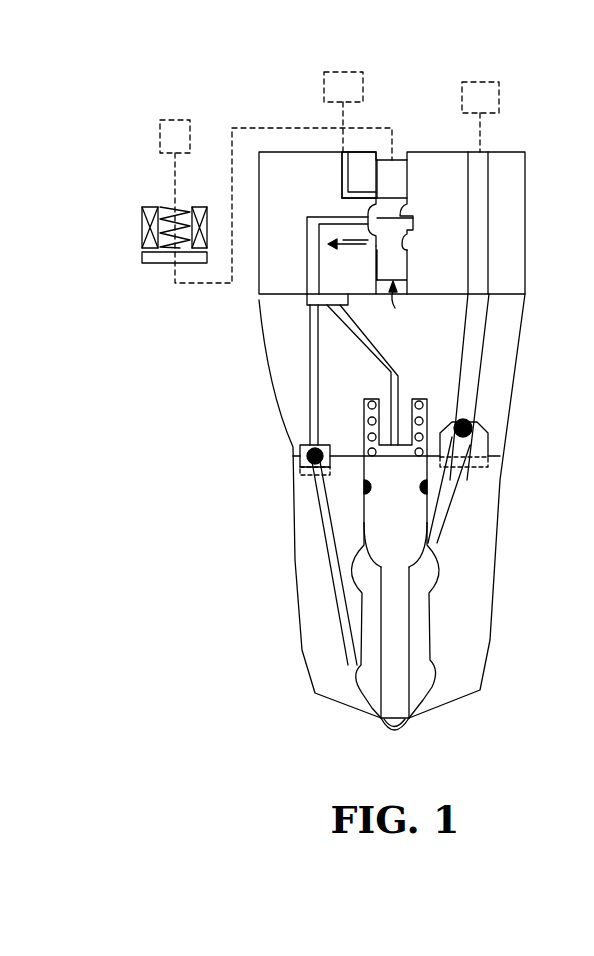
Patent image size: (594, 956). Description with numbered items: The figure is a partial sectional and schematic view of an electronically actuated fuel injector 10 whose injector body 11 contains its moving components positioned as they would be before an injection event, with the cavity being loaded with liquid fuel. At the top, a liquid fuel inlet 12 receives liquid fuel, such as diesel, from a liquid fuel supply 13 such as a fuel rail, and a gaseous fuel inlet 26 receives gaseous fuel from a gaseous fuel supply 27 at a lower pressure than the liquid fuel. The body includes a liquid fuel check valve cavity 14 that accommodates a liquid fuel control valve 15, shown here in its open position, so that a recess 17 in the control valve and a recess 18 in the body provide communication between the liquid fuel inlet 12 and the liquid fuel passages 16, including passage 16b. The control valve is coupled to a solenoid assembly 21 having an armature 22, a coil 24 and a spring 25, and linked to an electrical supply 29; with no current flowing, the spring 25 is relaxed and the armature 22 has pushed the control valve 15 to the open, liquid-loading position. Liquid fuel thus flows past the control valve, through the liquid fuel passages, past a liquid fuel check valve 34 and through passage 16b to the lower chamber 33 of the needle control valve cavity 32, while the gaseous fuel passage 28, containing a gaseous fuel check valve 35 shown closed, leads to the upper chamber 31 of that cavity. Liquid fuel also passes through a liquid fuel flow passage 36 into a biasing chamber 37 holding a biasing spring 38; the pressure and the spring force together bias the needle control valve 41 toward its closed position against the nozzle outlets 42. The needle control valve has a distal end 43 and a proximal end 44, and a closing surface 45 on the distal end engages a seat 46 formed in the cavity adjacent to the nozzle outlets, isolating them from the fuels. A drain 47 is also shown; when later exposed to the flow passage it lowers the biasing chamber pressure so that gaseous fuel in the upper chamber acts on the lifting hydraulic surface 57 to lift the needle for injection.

The fuel injector 10 is at (341, 434).
The injector body 11 is at (275, 395).
The liquid fuel inlet 12 is at (342, 170).
The liquid fuel supply 13 is at (343, 72).
The liquid fuel check valve cavity 14 is at (400, 160).
The liquid fuel control valve 15 is at (395, 308).
The liquid fuel passages 16 is at (313, 240).
The liquid fuel passage 16b is at (330, 538).
The recess 17 is at (380, 194).
The recess 18 is at (413, 228).
The solenoid assembly 21 is at (147, 277).
The armature 22 is at (165, 263).
The coil 24 is at (142, 222).
The spring 25 is at (180, 248).
The gaseous fuel inlet 26 is at (487, 172).
The gaseous fuel supply 27 is at (480, 82).
The gaseous fuel passage 28 is at (478, 370).
The electrical supply 29 is at (175, 120).
The upper chamber 31 is at (435, 581).
The needle control valve cavity 32 is at (421, 628).
The lower chamber 33 is at (430, 676).
The liquid fuel check valve 34 is at (290, 474).
The gaseous fuel check valve 35 is at (497, 445).
The liquid fuel flow passage 36 is at (364, 345).
The biasing chamber 37 is at (385, 453).
The biasing spring 38 is at (421, 419).
The needle control valve 41 is at (372, 620).
The nozzle outlets 42 is at (385, 735).
The distal end 43 is at (423, 727).
The proximal end 44 is at (408, 451).
The closing surface 45 is at (375, 718).
The seat 46 is at (410, 698).
The drain 47 is at (363, 250).
The lifting hydraulic surface 57 is at (380, 560).